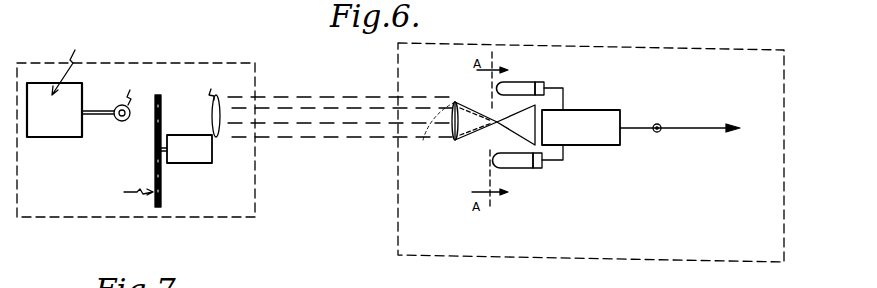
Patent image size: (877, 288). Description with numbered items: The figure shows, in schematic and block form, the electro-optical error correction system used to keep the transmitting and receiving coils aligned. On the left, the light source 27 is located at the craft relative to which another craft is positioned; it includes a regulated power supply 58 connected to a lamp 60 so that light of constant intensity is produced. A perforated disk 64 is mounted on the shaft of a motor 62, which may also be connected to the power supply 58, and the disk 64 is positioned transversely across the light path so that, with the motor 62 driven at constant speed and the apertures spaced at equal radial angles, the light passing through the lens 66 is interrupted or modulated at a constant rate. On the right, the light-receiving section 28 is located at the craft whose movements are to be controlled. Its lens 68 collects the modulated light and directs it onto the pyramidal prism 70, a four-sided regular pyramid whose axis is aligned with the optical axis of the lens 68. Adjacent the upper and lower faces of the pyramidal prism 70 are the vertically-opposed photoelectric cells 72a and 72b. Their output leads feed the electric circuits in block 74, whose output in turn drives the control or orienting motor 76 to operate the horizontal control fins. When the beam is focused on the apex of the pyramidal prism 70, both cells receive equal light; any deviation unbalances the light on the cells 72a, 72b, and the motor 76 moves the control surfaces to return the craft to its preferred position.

The light source 27 is at (106, 218).
The light-receiving section 28 is at (764, 264).
The regulated power supply 58 is at (65, 130).
The lamp 60 is at (128, 121).
The motor 62 is at (188, 160).
The perforated disk 64 is at (161, 97).
The lens 66 is at (212, 122).
The lens 68 is at (454, 111).
The pyramidal prism 70 is at (497, 134).
The photoelectric cell 72a is at (520, 81).
The photoelectric cell 72b is at (520, 168).
The electric circuits 74 is at (585, 108).
The control or orienting motor 76 is at (657, 132).